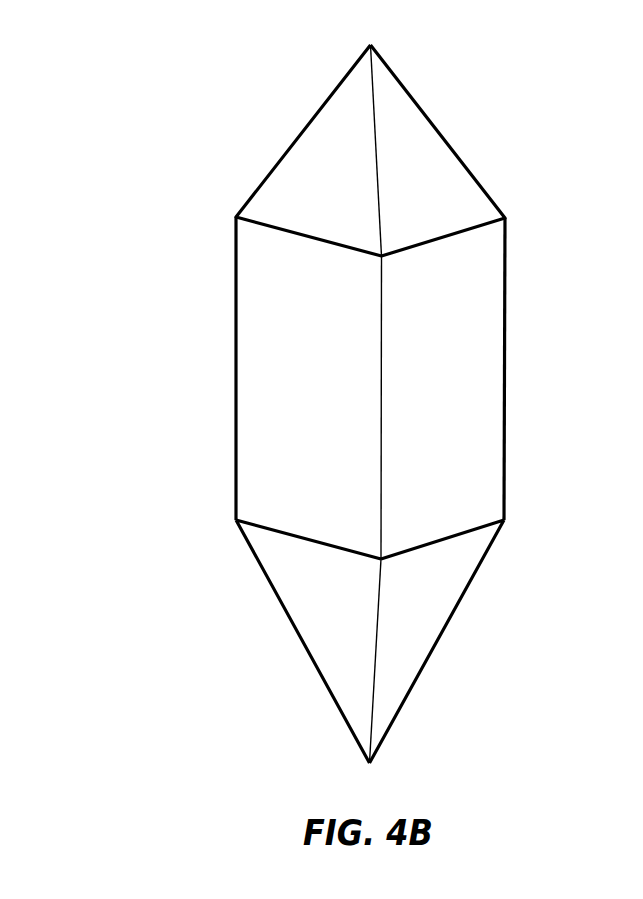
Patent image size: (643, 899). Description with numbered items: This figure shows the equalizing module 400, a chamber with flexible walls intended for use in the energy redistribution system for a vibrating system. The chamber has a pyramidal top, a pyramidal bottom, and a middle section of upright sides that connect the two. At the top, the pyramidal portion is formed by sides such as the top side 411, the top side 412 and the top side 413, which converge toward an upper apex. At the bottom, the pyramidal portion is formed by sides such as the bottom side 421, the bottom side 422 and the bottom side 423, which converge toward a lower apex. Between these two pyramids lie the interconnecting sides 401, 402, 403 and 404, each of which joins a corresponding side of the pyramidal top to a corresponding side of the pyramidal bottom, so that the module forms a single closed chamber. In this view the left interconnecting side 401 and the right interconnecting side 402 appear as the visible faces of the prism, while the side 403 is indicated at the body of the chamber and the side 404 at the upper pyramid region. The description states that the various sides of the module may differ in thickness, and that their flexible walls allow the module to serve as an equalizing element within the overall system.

The equalizing module 400 is at (342, 404).
The side 401 is at (250, 288).
The side 402 is at (488, 308).
The side 403 is at (384, 386).
The side 404 is at (350, 150).
The pyramidal top side 411 is at (305, 150).
The pyramidal top side 412 is at (420, 147).
The pyramidal top side 413 is at (440, 80).
The pyramidal bottom side 421 is at (302, 603).
The pyramidal bottom side 422 is at (430, 623).
The pyramidal bottom side 423 is at (368, 641).